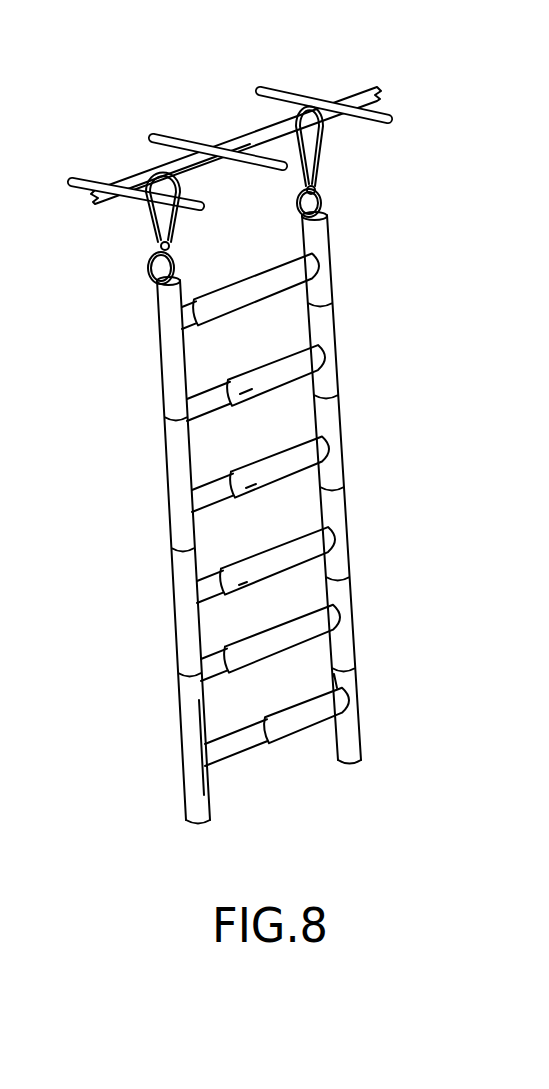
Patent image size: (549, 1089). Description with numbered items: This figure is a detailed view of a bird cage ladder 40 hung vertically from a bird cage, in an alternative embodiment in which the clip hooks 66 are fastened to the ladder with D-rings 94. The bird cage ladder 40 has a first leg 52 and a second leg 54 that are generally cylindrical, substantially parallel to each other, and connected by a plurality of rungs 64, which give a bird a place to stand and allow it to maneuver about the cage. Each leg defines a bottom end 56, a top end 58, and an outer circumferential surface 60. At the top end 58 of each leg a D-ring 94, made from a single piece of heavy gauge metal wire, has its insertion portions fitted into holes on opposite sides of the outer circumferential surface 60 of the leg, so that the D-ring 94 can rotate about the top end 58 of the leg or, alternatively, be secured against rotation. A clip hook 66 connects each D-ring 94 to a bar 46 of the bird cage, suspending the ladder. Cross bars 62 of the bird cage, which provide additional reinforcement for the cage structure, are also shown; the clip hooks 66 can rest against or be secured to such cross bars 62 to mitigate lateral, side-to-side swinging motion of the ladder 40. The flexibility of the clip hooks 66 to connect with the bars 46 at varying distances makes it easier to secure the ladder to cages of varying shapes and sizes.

The bird cage ladder 40 is at (126, 418).
The bar 46 is at (348, 99).
The first leg 52 is at (172, 528).
The second leg 54 is at (345, 448).
The bottom end 56 is at (210, 822).
The top end 58 is at (161, 284).
The outer circumferential surface 60 is at (182, 629).
The cross bar 62 is at (260, 105).
The rung 64 is at (338, 345).
The clip hook 66 is at (146, 218).
The D-ring 94 is at (150, 276).